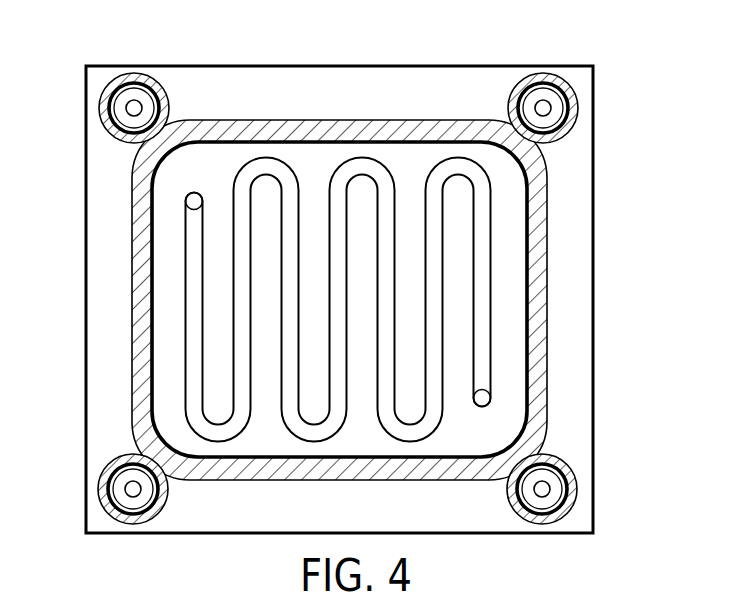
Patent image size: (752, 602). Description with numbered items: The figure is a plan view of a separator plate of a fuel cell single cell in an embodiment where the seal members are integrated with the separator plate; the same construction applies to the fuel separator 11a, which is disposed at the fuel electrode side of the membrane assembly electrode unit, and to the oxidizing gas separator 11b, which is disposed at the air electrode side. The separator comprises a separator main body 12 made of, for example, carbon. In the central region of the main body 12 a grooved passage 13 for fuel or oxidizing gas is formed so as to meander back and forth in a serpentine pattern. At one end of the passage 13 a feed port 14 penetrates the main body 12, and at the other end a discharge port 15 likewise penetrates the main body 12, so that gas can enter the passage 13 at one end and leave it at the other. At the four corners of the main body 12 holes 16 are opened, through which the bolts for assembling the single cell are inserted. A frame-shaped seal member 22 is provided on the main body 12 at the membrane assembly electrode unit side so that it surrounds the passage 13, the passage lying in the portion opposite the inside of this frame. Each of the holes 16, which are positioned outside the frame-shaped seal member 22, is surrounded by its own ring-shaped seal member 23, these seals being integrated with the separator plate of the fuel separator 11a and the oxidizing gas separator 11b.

The fuel separator 11a is at (409, 281).
The oxidizing gas separator 11b is at (409, 281).
The separator main body 12 is at (573, 163).
The grooved passage 13 is at (485, 308).
The feed port 14 is at (490, 400).
The discharge port 15 is at (187, 202).
The holes 16 is at (135, 101).
The frame-shaped seal member 22 is at (540, 220).
The ring-shaped seal member 23 is at (102, 109).